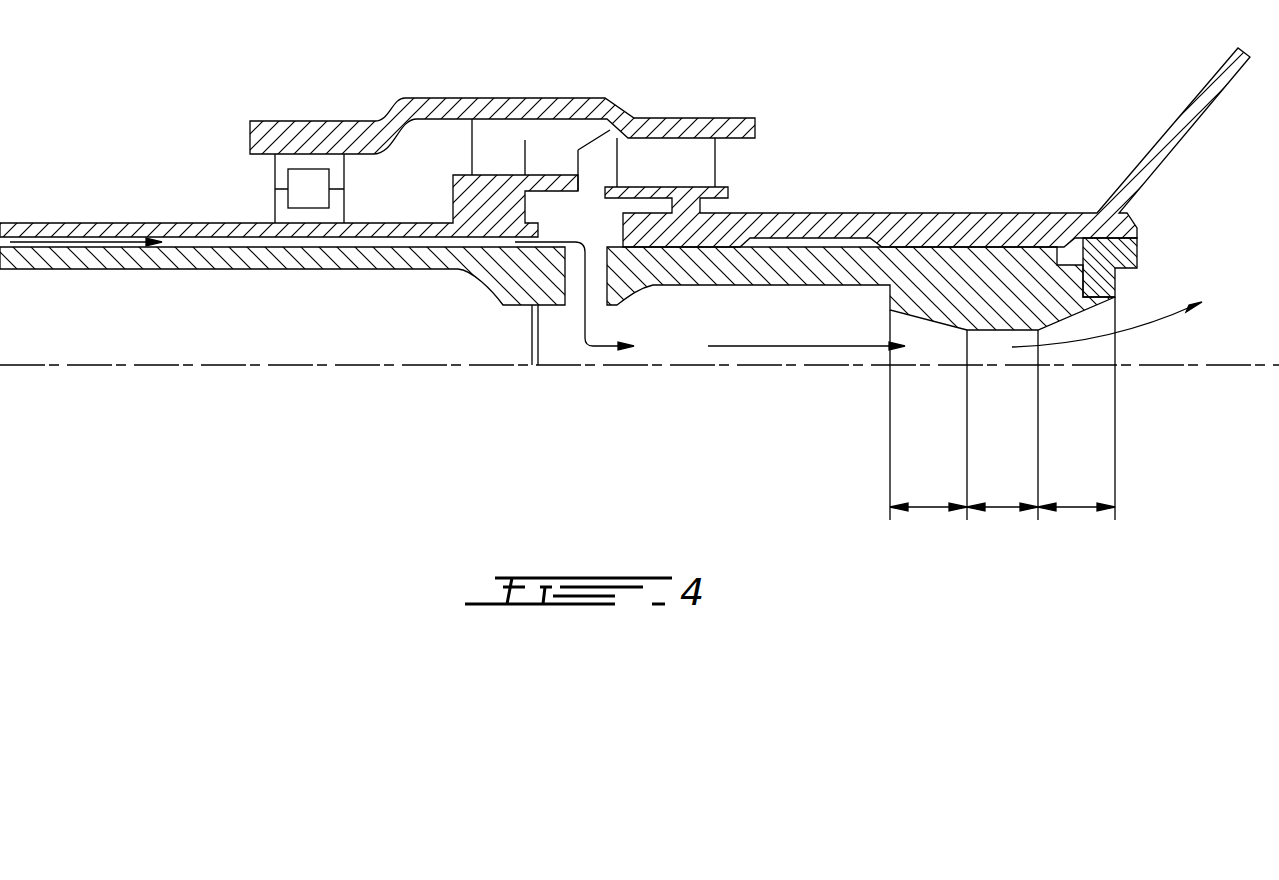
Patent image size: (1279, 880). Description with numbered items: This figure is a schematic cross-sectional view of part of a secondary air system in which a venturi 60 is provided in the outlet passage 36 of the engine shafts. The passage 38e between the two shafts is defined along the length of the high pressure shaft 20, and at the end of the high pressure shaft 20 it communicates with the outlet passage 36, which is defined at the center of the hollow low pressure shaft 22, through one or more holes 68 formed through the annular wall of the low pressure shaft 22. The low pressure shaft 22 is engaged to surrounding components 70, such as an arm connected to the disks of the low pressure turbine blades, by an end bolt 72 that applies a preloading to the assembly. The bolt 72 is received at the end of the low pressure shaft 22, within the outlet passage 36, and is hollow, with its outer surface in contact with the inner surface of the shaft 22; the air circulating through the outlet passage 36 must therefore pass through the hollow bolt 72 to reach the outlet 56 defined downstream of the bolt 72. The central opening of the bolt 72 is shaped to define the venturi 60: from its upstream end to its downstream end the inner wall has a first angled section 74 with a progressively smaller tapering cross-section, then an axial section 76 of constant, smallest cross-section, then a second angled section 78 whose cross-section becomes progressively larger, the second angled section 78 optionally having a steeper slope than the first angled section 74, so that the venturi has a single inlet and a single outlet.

The high pressure shaft 20 is at (78, 240).
The low pressure shaft 22 is at (80, 257).
The outlet passage 36 is at (658, 322).
The passage 38e is at (233, 245).
The outlet 56 is at (1185, 340).
The venturi 60 is at (978, 347).
The holes 68 is at (597, 268).
The surrounding components 70 is at (1030, 232).
The end bolt 72 is at (1150, 258).
The first angled section 74 is at (930, 505).
The axial section 76 is at (1008, 505).
The second angled section 78 is at (1080, 505).